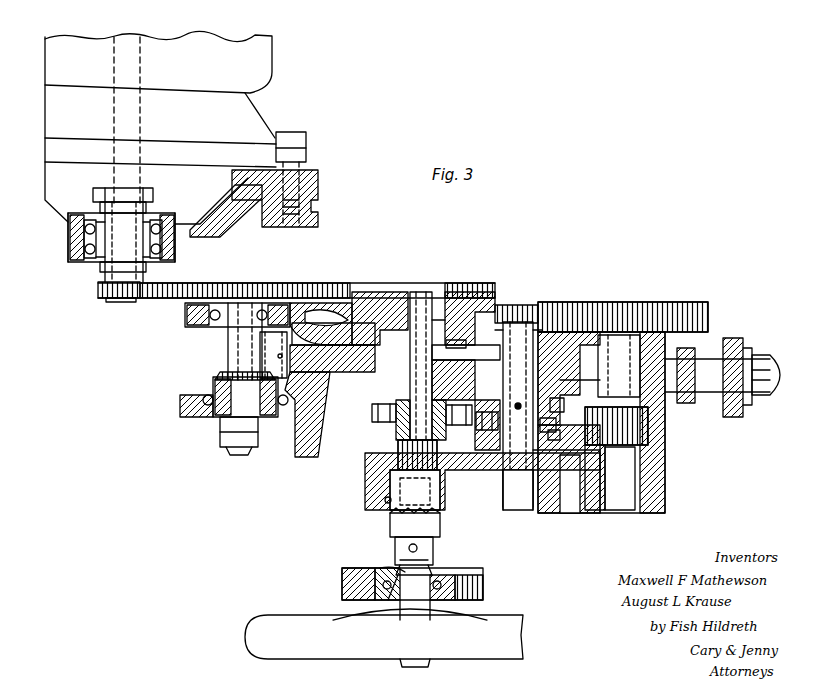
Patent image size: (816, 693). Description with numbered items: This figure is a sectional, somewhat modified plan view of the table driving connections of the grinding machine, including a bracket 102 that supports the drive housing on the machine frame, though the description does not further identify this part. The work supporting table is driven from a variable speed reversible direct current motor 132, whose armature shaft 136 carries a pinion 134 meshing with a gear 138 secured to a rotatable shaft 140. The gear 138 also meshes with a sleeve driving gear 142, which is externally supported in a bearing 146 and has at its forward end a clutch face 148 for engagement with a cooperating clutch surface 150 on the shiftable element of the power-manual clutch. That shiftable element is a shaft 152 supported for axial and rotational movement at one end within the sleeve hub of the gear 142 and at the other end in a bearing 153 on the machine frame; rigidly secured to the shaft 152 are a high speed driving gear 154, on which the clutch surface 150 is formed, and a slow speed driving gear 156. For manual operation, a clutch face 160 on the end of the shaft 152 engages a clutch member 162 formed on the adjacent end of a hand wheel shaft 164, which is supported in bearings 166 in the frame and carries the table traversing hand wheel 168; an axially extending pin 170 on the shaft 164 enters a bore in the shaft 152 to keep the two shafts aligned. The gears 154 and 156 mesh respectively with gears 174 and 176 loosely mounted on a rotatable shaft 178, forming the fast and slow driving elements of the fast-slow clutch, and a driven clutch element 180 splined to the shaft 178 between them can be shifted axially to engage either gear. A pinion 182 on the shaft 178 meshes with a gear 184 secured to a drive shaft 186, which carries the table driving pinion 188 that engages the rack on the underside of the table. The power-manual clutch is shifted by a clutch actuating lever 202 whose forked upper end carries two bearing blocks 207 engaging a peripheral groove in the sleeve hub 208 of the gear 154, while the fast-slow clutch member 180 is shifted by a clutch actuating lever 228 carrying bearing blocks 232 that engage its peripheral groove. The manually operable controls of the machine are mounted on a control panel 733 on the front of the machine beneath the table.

The variable speed reversible direct current motor 132 is at (160, 134).
The bracket 102 is at (282, 230).
The armature shaft 136 is at (128, 176).
The pinion 134 is at (98, 290).
The gear 138 is at (190, 283).
The bearing 146 is at (375, 318).
The clutch face 148 is at (349, 349).
The clutch surface 150 is at (365, 350).
The rotatable shaft 140 is at (240, 447).
The shaft 152 is at (414, 292).
The sleeve driving gear 142 is at (483, 292).
The high speed driving gear 154 is at (455, 374).
The clutch actuating lever 202 is at (370, 412).
The sleeve hub 208 is at (395, 433).
The bearing blocks 207 is at (438, 420).
The driven clutch element 180 is at (478, 432).
The bearing blocks 232 is at (529, 419).
The clutch actuating lever 228 is at (560, 405).
The rotatable shaft 178 is at (518, 320).
The pinion 182 is at (540, 305).
The gear 184 is at (702, 302).
The drive shaft 186 is at (625, 302).
The gear 174 is at (600, 366).
The gear 176 is at (565, 513).
The table driving pinion 188 is at (648, 428).
The slow speed driving gear 156 is at (395, 458).
The clutch face 160 is at (440, 505).
The bearing 153 is at (385, 500).
The clutch member 162 is at (390, 524).
The pin 170 is at (395, 548).
The hand wheel shaft 164 is at (435, 560).
The bearings 166 is at (375, 570).
The control panel 733 is at (483, 580).
The table traversing hand wheel 168 is at (305, 632).